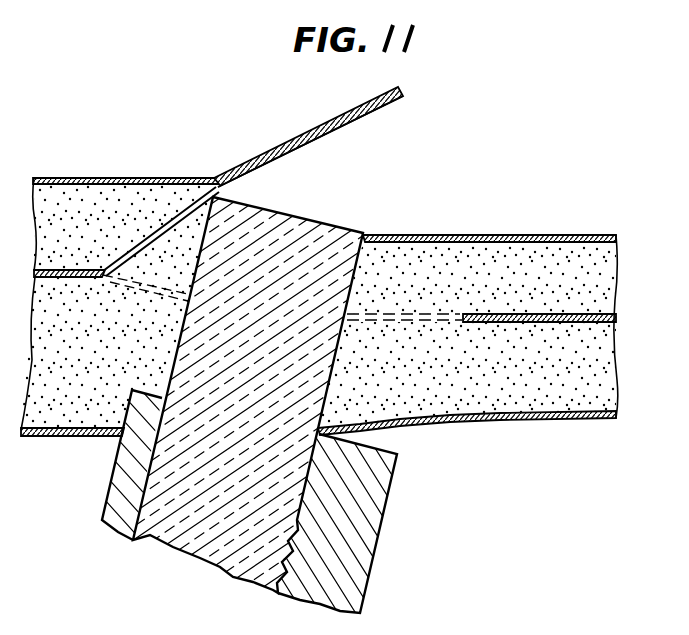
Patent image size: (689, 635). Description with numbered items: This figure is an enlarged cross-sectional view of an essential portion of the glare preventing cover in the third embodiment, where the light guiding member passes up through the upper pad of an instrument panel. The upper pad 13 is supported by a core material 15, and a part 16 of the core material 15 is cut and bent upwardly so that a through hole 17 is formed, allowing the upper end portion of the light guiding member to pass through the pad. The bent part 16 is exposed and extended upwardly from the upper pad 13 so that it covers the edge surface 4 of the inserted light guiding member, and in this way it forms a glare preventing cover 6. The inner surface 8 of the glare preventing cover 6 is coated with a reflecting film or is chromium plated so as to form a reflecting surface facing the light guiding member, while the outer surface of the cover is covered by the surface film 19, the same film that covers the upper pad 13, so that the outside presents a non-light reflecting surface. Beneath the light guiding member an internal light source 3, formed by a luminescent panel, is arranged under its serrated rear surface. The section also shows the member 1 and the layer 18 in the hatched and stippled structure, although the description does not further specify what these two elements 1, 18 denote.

The first clamping block 1 is at (108, 508).
The internal light source 3 is at (363, 553).
The edge surface 4 is at (302, 217).
The glare preventing cover 6 is at (320, 125).
The inner surface 8 is at (347, 122).
The upper pad 13 is at (533, 240).
The core material 15 is at (58, 262).
The part of the core material 16 is at (187, 178).
The through hole 17 is at (420, 313).
The lower left layer 18 is at (47, 436).
The surface film 19 is at (112, 177).